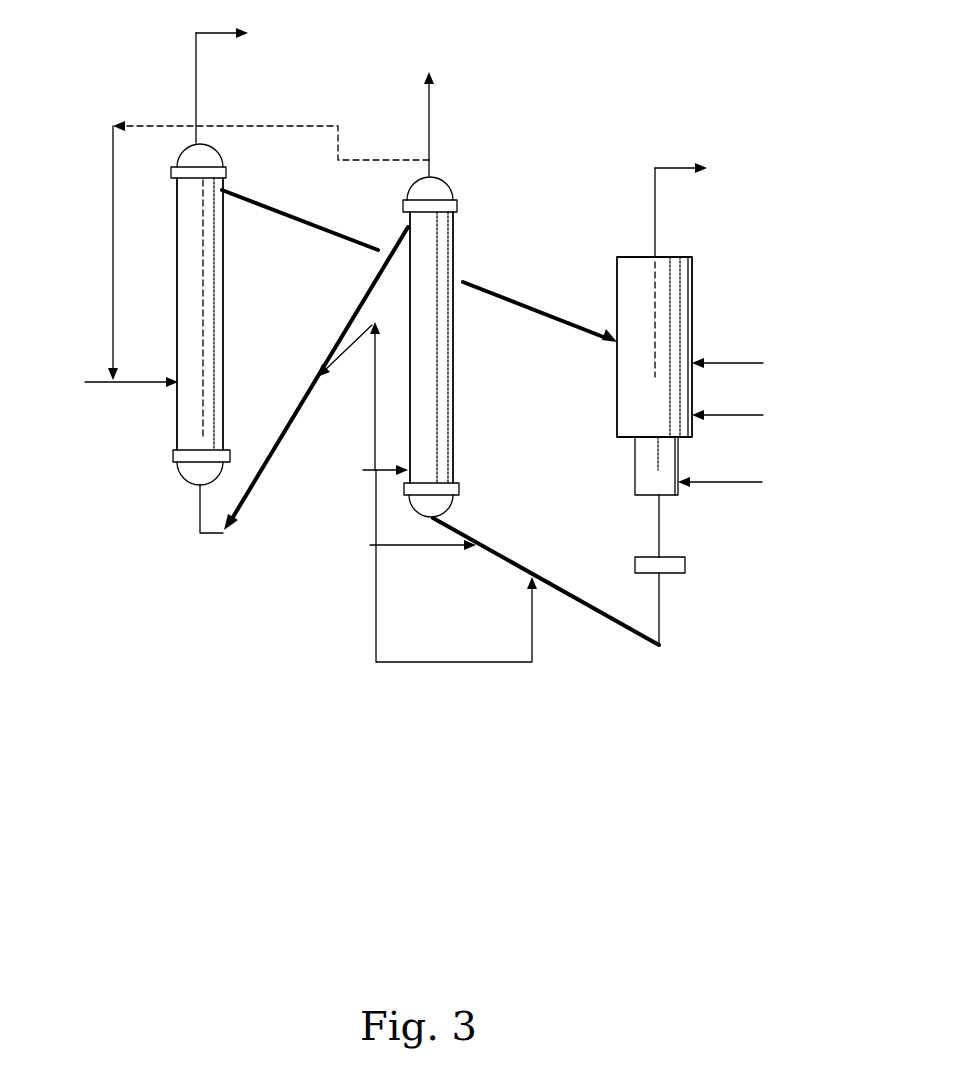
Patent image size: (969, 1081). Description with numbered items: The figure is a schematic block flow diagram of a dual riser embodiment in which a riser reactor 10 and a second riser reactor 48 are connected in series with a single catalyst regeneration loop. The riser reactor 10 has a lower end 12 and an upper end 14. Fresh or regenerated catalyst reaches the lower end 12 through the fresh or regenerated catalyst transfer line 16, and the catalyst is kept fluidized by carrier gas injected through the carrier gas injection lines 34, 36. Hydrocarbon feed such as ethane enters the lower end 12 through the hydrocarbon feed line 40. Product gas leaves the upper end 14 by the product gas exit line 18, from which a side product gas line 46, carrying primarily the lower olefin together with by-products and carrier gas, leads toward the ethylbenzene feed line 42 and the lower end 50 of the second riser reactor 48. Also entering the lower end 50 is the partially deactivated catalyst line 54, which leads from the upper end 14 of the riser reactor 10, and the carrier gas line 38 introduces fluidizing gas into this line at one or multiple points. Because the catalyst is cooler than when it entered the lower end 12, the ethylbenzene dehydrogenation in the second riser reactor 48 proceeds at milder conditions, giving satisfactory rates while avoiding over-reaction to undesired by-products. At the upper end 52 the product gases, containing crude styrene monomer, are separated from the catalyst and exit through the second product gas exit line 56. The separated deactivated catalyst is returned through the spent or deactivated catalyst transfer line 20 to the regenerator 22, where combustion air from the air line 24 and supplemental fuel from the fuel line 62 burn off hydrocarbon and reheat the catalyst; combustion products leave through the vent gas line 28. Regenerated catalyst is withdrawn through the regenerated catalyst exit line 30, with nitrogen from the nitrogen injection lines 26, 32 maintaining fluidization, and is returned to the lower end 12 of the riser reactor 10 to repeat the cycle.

The riser reactor 10 is at (442, 424).
The lower end 12 is at (440, 517).
The upper end 14 is at (432, 172).
The fresh or regenerated catalyst transfer line 16 is at (518, 565).
The product gas exit line 18 is at (429, 132).
The spent or deactivated catalyst transfer line 20 is at (512, 300).
The regenerator 22 is at (657, 414).
The air line 24 is at (715, 417).
The nitrogen injection line 26 is at (740, 487).
The vent gas line 28 is at (655, 218).
The regenerated catalyst exit line 30 is at (659, 528).
The nitrogen injection line 32 is at (670, 575).
The carrier gas injection line 34 is at (397, 658).
The carrier gas injection line 36 is at (402, 547).
The carrier gas line 38 is at (372, 433).
The hydrocarbon feed line 40 is at (368, 475).
The ethylbenzene feed line 42 is at (92, 377).
The side product gas line 46 is at (113, 187).
The second riser reactor 48 is at (210, 392).
The lower end 50 is at (195, 487).
The upper end 52 is at (183, 140).
The partially deactivated catalyst line 54 is at (330, 355).
The second product gas exit line 56 is at (196, 117).
The fuel line 62 is at (718, 362).